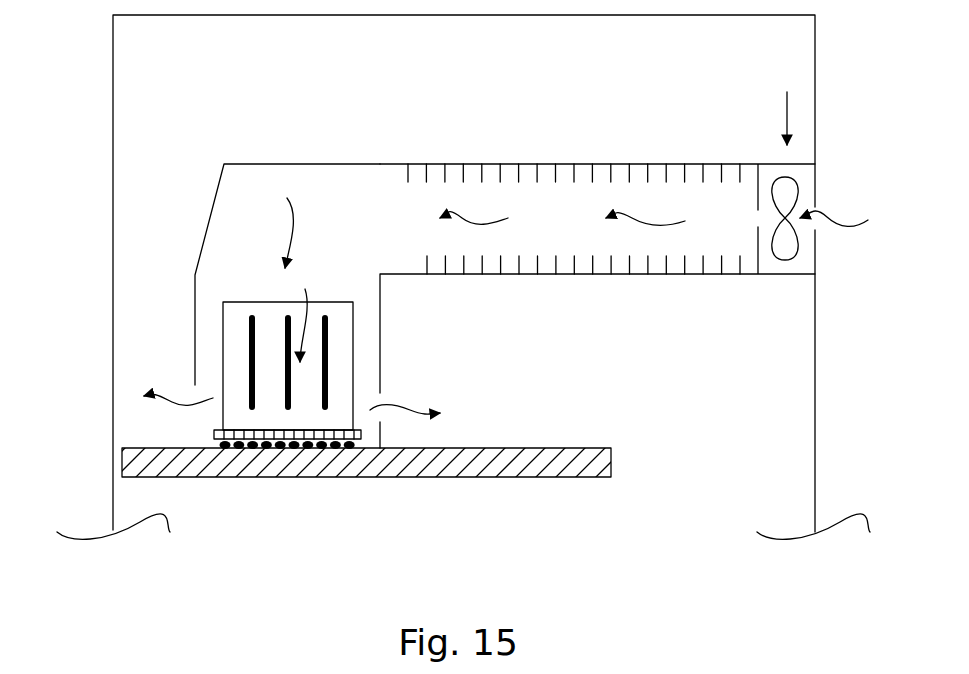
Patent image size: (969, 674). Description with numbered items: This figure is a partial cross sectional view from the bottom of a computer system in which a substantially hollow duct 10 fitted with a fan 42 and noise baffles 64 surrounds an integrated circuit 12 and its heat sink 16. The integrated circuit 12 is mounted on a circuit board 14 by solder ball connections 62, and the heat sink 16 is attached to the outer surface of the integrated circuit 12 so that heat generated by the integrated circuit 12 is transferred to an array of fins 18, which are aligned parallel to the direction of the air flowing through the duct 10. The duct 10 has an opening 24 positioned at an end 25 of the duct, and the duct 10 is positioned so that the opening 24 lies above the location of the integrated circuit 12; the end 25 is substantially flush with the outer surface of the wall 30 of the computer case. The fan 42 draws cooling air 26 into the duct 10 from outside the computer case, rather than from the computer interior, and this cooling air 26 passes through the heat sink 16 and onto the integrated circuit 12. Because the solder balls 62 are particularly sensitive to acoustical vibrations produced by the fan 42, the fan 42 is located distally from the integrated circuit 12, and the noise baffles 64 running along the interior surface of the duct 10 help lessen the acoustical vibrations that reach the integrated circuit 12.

The duct 10 is at (298, 164).
The integrated circuit 12 is at (216, 434).
The circuit board 14 is at (441, 455).
The heat sink 16 is at (333, 412).
The fins 18 is at (248, 365).
The opening 24 is at (748, 221).
The end 25 is at (820, 143).
The cooling air 26 is at (414, 306).
The wall 30 is at (814, 432).
The fan 42 is at (786, 190).
The solder ball connections 62 is at (280, 449).
The noise baffles 64 is at (518, 178).